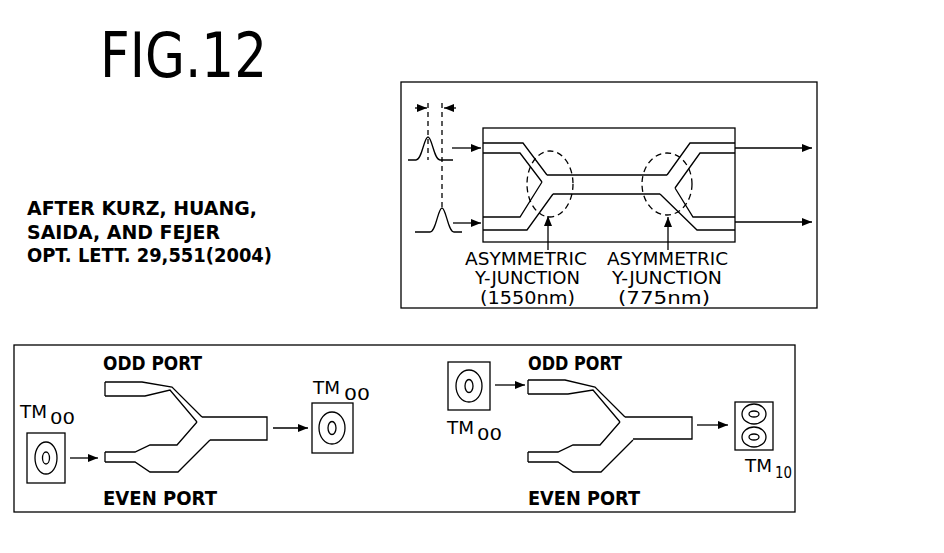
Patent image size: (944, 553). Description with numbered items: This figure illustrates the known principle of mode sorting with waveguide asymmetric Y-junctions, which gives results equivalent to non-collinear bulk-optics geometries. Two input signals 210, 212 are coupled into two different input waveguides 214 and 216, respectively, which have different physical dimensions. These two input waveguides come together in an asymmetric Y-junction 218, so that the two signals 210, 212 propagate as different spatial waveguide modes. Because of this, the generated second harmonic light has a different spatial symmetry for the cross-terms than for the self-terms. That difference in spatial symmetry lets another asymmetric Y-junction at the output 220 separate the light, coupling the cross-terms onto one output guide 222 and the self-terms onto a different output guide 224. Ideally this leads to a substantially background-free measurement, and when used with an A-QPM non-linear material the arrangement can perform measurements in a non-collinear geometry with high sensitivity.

The input signal 210 is at (444, 155).
The input signal 212 is at (448, 235).
The input waveguide 214 is at (365, 282).
The input waveguide 216 is at (364, 335).
The asymmetric Y-junction 218 is at (540, 152).
The asymmetric Y-junction at the output 220 is at (683, 158).
The output guide 222 is at (773, 237).
The output guide 224 is at (773, 134).